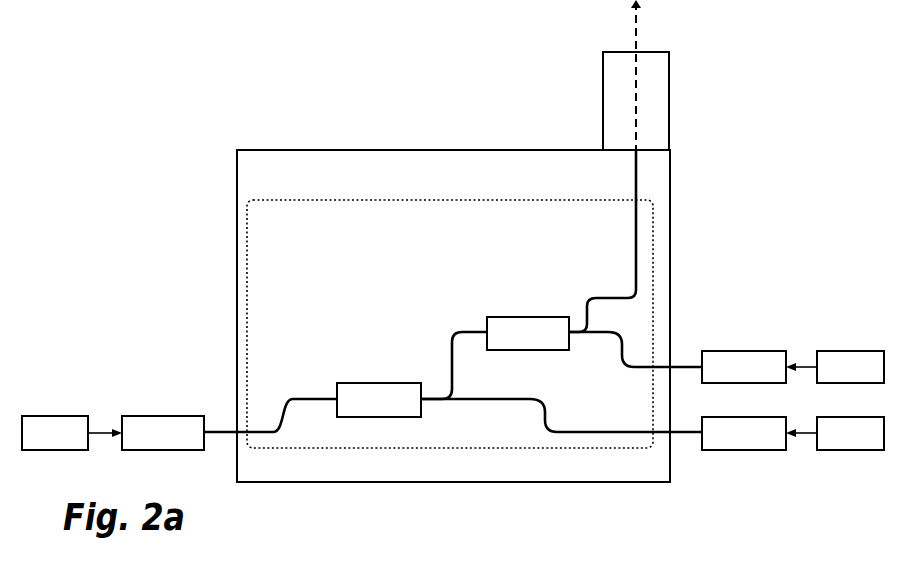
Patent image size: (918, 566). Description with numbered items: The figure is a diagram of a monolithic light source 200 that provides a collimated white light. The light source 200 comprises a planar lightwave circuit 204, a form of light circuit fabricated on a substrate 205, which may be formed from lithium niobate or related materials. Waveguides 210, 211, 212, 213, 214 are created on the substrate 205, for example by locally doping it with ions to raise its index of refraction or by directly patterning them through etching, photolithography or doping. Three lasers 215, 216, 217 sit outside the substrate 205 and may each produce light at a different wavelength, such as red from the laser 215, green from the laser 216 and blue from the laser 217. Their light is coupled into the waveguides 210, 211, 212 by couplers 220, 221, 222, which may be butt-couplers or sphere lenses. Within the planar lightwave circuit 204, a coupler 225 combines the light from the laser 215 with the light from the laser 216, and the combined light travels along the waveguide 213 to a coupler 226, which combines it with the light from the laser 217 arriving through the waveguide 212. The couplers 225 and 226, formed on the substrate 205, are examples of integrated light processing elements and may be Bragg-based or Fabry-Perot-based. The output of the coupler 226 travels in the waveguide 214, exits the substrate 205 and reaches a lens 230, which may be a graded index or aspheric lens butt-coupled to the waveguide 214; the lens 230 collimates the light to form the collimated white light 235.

The monolithic light source 200 is at (115, 50).
The planar lightwave circuit 204 is at (405, 200).
The substrate 205 is at (296, 178).
The waveguide 210 is at (303, 399).
The waveguide 211 is at (587, 432).
The waveguide 212 is at (596, 332).
The waveguide 213 is at (452, 362).
The waveguide 214 is at (636, 226).
The laser 215 is at (60, 416).
The laser 216 is at (837, 417).
The laser 217 is at (837, 351).
The coupler 220 is at (155, 416).
The coupler 221 is at (745, 417).
The coupler 222 is at (745, 351).
The coupler 225 is at (378, 383).
The coupler 226 is at (528, 317).
The lens 230 is at (603, 80).
The collimated white light 235 is at (637, 34).